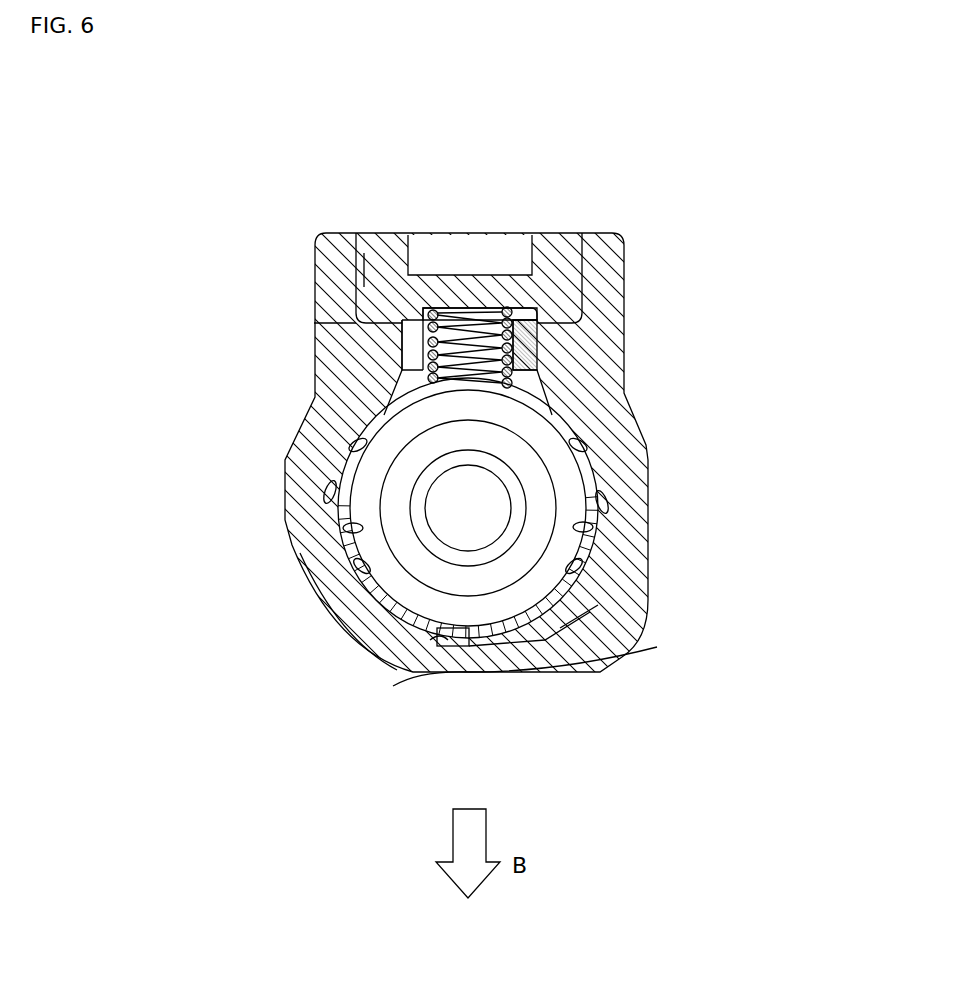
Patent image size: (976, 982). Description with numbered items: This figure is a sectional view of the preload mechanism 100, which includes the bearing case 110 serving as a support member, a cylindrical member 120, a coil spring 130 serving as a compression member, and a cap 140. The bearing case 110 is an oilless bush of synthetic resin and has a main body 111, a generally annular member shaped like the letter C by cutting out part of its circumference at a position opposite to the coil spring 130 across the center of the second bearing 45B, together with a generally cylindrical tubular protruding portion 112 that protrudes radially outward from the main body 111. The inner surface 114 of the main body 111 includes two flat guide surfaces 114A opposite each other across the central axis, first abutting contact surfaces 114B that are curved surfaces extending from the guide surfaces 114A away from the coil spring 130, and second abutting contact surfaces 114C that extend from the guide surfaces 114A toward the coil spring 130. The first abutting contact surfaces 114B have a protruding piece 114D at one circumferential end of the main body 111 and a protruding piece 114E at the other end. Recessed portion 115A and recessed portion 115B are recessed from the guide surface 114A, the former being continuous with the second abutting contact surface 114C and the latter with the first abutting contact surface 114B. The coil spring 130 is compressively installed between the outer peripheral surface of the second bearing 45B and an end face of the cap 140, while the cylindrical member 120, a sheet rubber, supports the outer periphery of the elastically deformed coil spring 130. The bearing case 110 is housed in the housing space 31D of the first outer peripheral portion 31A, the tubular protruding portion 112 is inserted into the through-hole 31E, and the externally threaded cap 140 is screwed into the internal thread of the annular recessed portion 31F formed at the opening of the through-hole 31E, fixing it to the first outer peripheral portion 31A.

The preload mechanism 100 is at (584, 180).
The bearing case 110 is at (598, 422).
The main body 111 is at (588, 612).
The tubular protruding portion 112 is at (400, 345).
The inner surface 114 is at (160, 455).
The guide surfaces 114A is at (350, 530).
The first abutting contact surfaces 114B is at (360, 568).
The second abutting contact surfaces 114C is at (352, 447).
The protruding piece 114D is at (404, 628).
The protruding piece 114E is at (503, 642).
The recessed portion 115A is at (325, 490).
The recessed portion 115B is at (606, 500).
The cylindrical member 120 is at (540, 347).
The coil spring 130 is at (530, 308).
The cap 140 is at (560, 272).
The first outer peripheral portion 31A is at (622, 616).
The housing space 31D is at (447, 632).
The through-hole 31E is at (405, 363).
The annular recessed portion 31F is at (360, 270).
The second bearing 45B is at (392, 412).